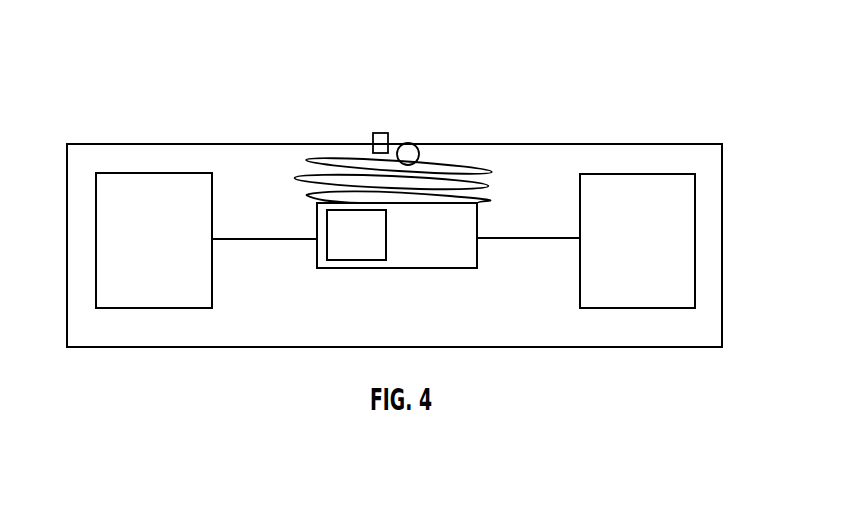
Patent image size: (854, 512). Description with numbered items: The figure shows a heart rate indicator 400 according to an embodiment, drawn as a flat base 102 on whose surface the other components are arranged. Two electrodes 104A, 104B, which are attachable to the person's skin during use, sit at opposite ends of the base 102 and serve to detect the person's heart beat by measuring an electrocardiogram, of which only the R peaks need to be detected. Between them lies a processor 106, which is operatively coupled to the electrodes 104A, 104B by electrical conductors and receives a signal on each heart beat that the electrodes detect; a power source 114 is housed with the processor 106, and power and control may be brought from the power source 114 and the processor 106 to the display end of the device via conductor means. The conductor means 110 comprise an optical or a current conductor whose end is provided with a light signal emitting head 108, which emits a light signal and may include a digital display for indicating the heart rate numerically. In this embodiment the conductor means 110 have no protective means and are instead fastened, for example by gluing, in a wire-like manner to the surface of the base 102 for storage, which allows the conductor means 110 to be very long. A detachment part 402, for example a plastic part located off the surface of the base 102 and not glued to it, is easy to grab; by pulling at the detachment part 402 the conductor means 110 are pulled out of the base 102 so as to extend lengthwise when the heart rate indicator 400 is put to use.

The heart rate indicator 400 is at (586, 106).
The base 102 is at (394, 245).
The electrode 104A is at (154, 240).
The electrode 104B is at (637, 241).
The processor 106 is at (472, 270).
The power source 114 is at (356, 235).
The light signal emitting head 108 is at (410, 143).
The conductor means 110 is at (471, 167).
The detachment part 402 is at (381, 133).